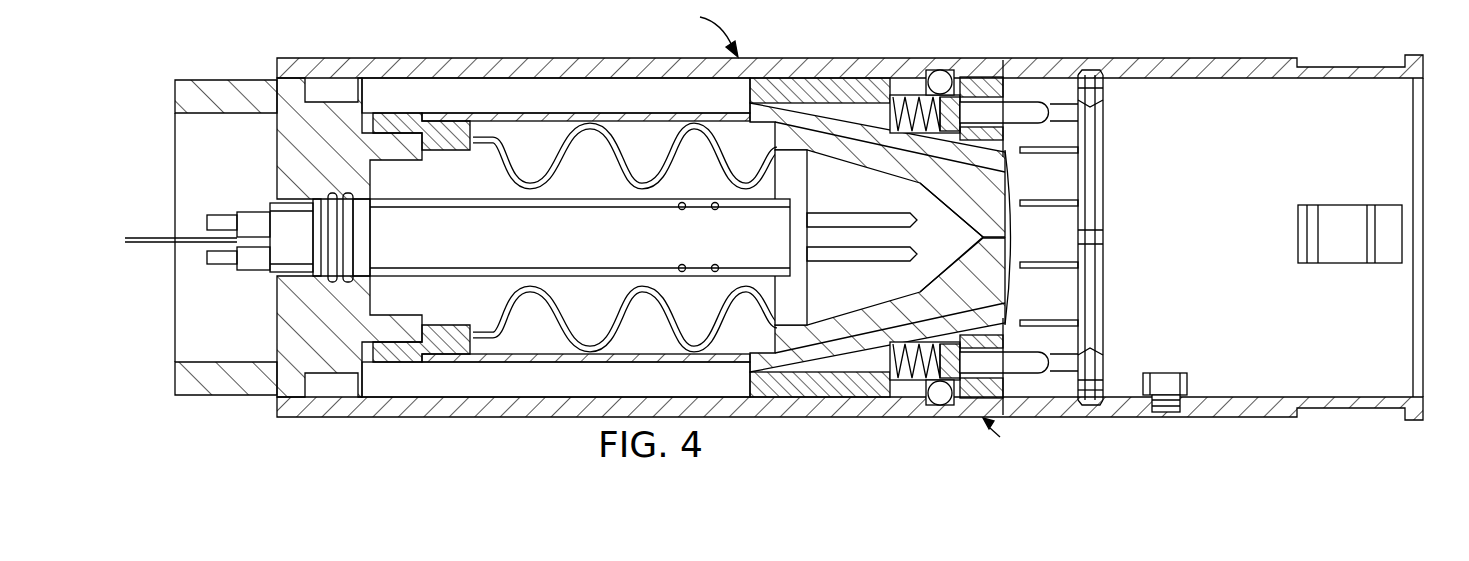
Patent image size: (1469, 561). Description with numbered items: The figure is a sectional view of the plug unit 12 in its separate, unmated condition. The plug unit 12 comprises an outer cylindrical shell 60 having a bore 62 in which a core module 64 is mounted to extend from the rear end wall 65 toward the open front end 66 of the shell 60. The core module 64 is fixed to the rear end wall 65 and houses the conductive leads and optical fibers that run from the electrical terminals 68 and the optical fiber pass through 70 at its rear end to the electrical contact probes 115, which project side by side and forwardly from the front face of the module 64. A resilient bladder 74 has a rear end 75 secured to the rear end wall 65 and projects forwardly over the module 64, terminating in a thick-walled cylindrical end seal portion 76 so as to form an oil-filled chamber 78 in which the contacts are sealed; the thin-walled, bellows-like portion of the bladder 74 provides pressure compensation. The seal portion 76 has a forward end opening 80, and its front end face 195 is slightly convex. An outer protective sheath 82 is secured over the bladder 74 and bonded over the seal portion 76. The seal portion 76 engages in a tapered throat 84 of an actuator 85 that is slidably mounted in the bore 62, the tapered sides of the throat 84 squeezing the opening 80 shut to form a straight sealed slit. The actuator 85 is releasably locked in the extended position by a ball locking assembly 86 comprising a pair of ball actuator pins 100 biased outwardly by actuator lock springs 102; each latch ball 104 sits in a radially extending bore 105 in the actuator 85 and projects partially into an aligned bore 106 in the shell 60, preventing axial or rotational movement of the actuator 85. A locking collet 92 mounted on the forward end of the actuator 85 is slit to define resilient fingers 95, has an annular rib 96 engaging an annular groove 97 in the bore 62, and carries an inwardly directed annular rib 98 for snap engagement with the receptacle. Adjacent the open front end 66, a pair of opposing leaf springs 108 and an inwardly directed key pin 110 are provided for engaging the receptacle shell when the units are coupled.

The plug unit 12 is at (704, 29).
The outer cylindrical shell 60 is at (515, 410).
The bore 62 is at (458, 395).
The core module 64 is at (543, 217).
The rear end wall 65 is at (302, 298).
The open front end 66 is at (1420, 292).
The electrical terminals 68 is at (207, 222).
The optical fiber pass through 70 is at (262, 235).
The resilient bladder 74 is at (624, 127).
The rear end of bladder 75 is at (453, 132).
The cylindrical end seal portion 76 is at (960, 172).
The oil-filled chamber 78 is at (588, 320).
The forward end opening 80 is at (1013, 233).
The protective sheath 82 is at (650, 362).
The throat 84 is at (1008, 297).
The actuator 85 is at (835, 400).
The ball locking assembly 86 is at (1009, 439).
The locking collet 92 is at (1105, 112).
The resilient fingers 95 is at (1082, 185).
The annular rib 96 is at (1092, 402).
The annular groove 97 is at (1105, 68).
The inwardly directed annular rib 98 is at (1100, 373).
The ball actuator pins 100 is at (1022, 110).
The actuator lock springs 102 is at (898, 72).
The latch ball 104 is at (962, 70).
The radially inwardly extending bore 105 is at (912, 412).
The bores in plug shell 106 is at (932, 74).
The leaf springs 108 is at (1348, 213).
The key pin 110 is at (1165, 385).
The electrical contact probes 115 is at (866, 256).
The front end face 195 is at (1086, 246).